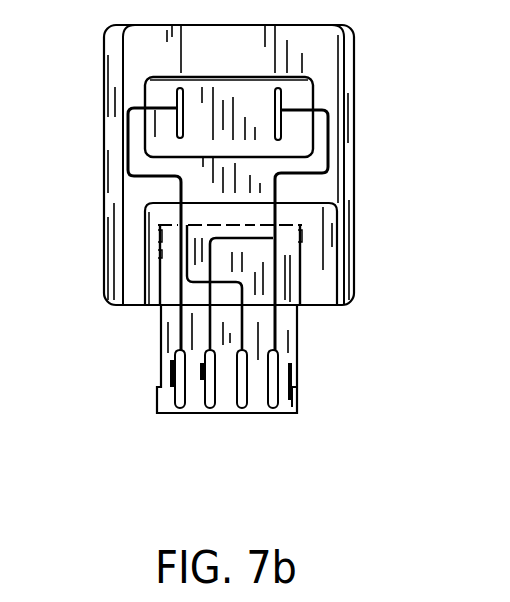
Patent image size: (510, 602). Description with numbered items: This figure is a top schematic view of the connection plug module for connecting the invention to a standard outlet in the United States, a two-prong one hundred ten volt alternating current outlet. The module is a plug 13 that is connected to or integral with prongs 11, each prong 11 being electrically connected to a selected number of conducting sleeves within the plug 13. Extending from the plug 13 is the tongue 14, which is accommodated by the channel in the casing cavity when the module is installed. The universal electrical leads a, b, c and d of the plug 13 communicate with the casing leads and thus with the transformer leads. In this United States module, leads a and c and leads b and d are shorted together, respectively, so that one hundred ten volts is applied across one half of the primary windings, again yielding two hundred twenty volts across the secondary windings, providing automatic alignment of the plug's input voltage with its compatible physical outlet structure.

The prong 11 is at (145, 98).
The plug 13 is at (110, 212).
The tongue 14 is at (297, 346).